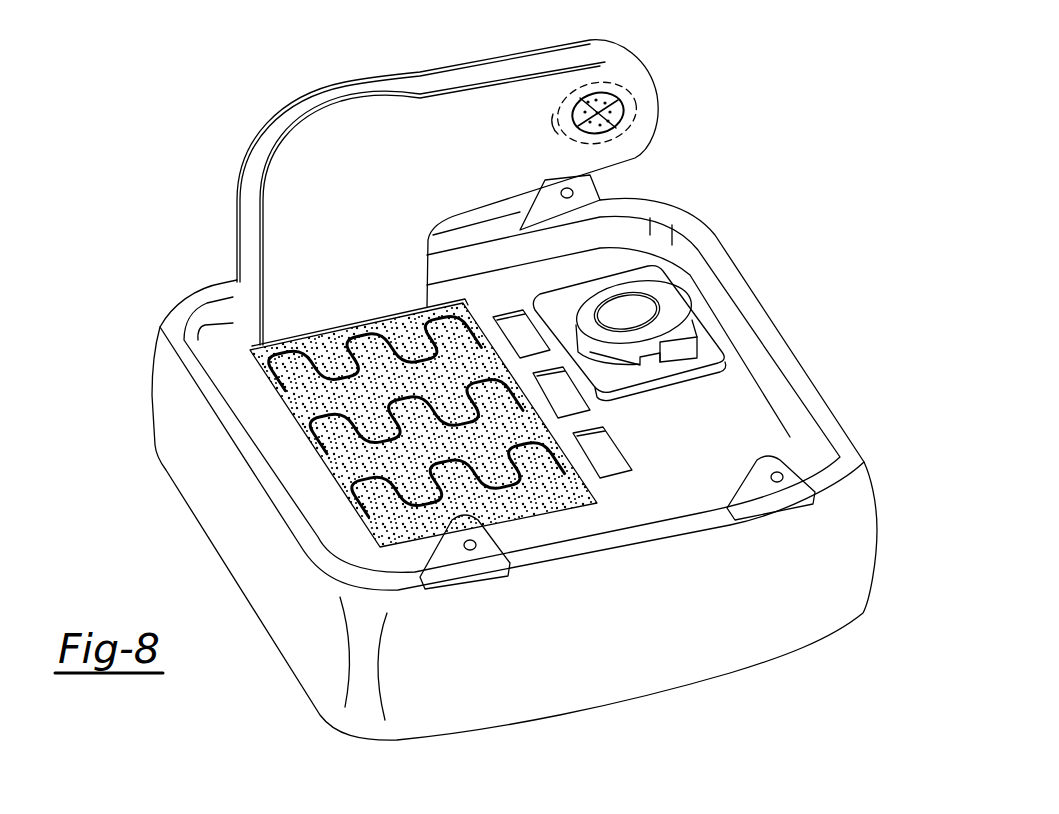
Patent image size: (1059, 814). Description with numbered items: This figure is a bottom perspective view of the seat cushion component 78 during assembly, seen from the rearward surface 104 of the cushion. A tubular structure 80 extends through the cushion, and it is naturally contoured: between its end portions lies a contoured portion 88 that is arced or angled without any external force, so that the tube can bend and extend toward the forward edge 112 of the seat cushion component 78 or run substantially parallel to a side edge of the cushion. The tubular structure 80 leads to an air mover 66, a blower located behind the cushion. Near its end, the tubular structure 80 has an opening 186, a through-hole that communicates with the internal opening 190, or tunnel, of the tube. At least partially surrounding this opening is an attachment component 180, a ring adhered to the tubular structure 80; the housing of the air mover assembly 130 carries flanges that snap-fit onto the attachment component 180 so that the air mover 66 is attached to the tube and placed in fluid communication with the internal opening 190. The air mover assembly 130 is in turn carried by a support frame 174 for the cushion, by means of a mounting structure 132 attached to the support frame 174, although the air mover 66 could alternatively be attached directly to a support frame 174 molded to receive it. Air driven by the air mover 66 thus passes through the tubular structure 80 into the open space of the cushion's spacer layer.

The seat cushion component 78 is at (133, 446).
The tubular structure 80 is at (373, 80).
The contoured portion 88 is at (365, 198).
The rearward surface 104 is at (287, 398).
The forward edge 112 is at (753, 312).
The air mover assembly 130 is at (637, 260).
The mounting structure 132 is at (720, 357).
The air mover 66 is at (700, 310).
The support frame 174 is at (782, 440).
The attachment component 180 is at (775, 160).
The opening 186 is at (567, 110).
The internal opening 190 is at (613, 121).